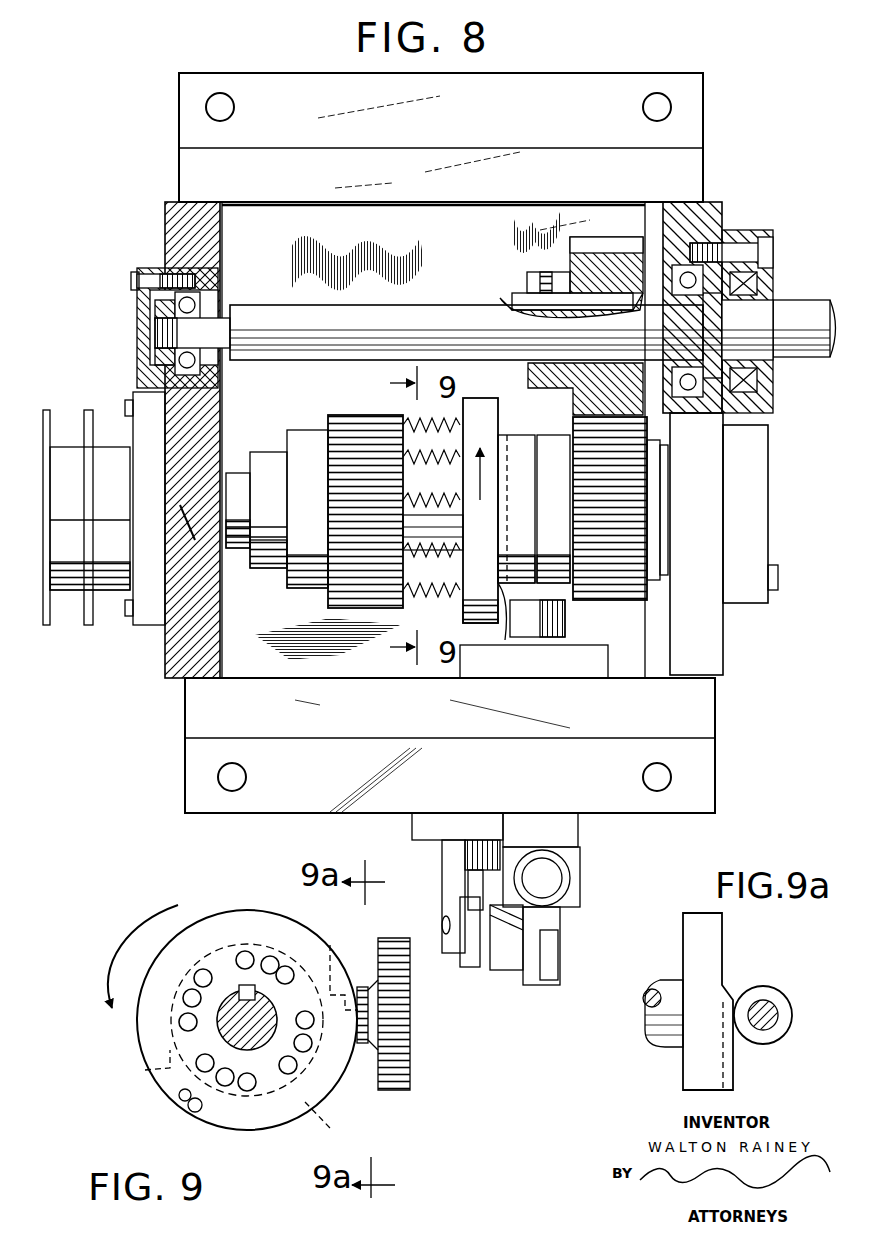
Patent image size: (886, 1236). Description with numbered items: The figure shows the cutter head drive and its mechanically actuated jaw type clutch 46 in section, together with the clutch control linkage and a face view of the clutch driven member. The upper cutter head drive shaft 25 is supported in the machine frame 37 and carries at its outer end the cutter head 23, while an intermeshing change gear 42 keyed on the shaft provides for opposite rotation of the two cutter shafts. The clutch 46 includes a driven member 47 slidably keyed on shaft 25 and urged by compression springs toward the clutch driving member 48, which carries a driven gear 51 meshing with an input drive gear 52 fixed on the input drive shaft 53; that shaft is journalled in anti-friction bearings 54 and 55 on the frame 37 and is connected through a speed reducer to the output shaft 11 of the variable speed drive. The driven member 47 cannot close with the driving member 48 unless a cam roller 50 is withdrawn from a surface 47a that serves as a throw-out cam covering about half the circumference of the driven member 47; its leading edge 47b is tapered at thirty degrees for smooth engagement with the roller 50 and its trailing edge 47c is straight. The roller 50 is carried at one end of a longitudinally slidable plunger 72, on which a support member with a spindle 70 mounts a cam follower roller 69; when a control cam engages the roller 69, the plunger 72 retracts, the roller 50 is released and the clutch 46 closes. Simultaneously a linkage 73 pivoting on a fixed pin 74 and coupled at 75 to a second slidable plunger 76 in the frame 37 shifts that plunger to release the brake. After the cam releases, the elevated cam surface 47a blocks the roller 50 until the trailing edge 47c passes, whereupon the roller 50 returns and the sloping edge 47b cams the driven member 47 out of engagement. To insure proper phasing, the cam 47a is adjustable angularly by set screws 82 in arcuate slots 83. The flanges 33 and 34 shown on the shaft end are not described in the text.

In FIG. 8, the output shaft 11 is at (806, 358).
In FIG. 8, the cutter head 23 is at (52, 522).
In FIG. 9A, the upper cutter head drive shaft 25 is at (652, 1044).
In FIG. 8, the shaft 33 is at (46, 410).
In FIG. 8, the pulley flange 34 is at (89, 410).
In FIG. 8, the frame 37 is at (172, 226).
In FIG. 8, the change gear 42 is at (398, 607).
In FIG. 8, the jaw type clutch 46 is at (497, 390).
In FIG. 8, the driven member 47 is at (508, 438).
In FIG. 9, the driven member 47 is at (285, 905).
In FIG. 9A, the driven member 47 is at (697, 930).
In FIG. 9, the surface 47a is at (329, 1125).
In FIG. 9A, the surface 47a is at (736, 1048).
In FIG. 8, the leading edge 47b is at (505, 642).
In FIG. 9, the leading edge 47b is at (336, 955).
In FIG. 9A, the leading edge 47b is at (728, 995).
In FIG. 9, the trailing edge 47c is at (137, 1072).
In FIG. 8, the clutch driving member 48 is at (556, 436).
In FIG. 8, the cam roller 50 is at (566, 620).
In FIG. 9, the cam roller 50 is at (362, 1045).
In FIG. 9A, the cam roller 50 is at (768, 988).
In FIG. 8, the driven gear 51 is at (618, 603).
In FIG. 8, the input drive gear 52 is at (620, 248).
In FIG. 8, the input drive shaft 53 is at (380, 314).
In FIG. 8, the anti-friction bearing 54 is at (198, 300).
In FIG. 8, the anti-friction bearing 55 is at (695, 434).
In FIG. 8, the cam follower roller 69 is at (563, 862).
In FIG. 8, the spindle 70 is at (553, 878).
In FIG. 8, the plunger 72 is at (562, 922).
In FIG. 8, the linkage 73 is at (512, 952).
In FIG. 8, the fixed pin 74 is at (470, 962).
In FIG. 8, the coupling 75 is at (442, 926).
In FIG. 8, the second slidable plunger 76 is at (455, 865).
In FIG. 9, the set screws 82 is at (190, 1108).
In FIG. 9, the slots 83 is at (202, 1112).